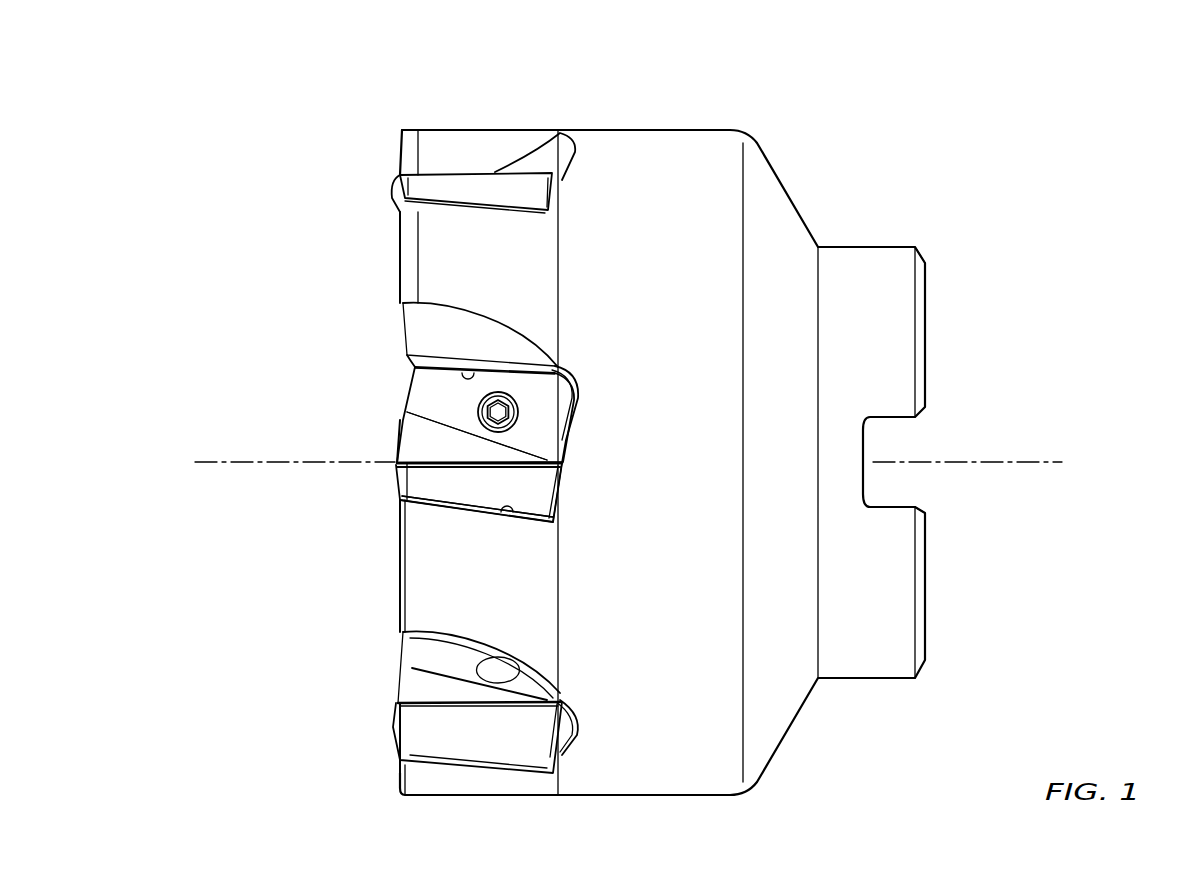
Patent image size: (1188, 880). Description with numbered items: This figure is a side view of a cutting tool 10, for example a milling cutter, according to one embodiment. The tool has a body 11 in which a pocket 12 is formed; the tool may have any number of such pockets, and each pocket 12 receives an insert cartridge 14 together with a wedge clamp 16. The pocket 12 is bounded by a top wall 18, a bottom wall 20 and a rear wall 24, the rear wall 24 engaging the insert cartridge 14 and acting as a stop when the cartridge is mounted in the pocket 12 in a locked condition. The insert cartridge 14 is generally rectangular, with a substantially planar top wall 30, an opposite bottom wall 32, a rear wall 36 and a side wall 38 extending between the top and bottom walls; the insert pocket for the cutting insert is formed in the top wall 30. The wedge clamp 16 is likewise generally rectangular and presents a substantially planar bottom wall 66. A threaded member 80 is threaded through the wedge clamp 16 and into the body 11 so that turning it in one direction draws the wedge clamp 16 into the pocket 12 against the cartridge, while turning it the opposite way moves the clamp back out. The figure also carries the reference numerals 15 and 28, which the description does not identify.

The cutting tool 10 is at (891, 103).
The body 11 is at (680, 153).
The pocket 12 is at (445, 510).
The insert cartridge 14 is at (391, 480).
The central axis 15 is at (1016, 461).
The wedge clamp 16 is at (397, 398).
The top wall 18 is at (483, 370).
The bottom wall 20 is at (507, 513).
The rear wall 24 is at (555, 497).
The mounting shank 28 is at (935, 297).
The top wall 30 is at (458, 462).
The bottom wall 32 is at (530, 525).
The rear wall 36 is at (565, 488).
The side wall 38 is at (473, 487).
The bottom wall 66 is at (453, 472).
The threaded member 80 is at (500, 408).